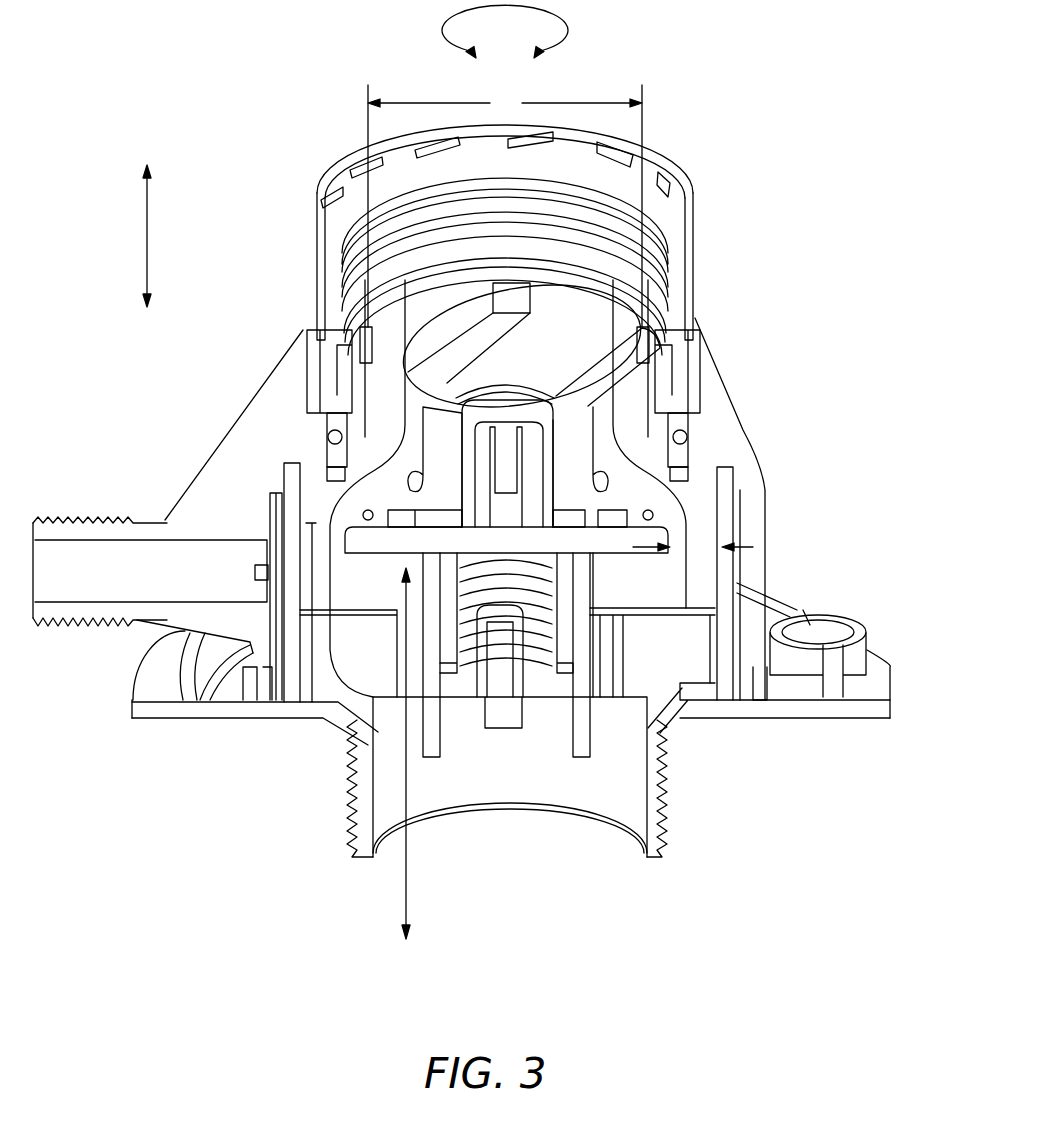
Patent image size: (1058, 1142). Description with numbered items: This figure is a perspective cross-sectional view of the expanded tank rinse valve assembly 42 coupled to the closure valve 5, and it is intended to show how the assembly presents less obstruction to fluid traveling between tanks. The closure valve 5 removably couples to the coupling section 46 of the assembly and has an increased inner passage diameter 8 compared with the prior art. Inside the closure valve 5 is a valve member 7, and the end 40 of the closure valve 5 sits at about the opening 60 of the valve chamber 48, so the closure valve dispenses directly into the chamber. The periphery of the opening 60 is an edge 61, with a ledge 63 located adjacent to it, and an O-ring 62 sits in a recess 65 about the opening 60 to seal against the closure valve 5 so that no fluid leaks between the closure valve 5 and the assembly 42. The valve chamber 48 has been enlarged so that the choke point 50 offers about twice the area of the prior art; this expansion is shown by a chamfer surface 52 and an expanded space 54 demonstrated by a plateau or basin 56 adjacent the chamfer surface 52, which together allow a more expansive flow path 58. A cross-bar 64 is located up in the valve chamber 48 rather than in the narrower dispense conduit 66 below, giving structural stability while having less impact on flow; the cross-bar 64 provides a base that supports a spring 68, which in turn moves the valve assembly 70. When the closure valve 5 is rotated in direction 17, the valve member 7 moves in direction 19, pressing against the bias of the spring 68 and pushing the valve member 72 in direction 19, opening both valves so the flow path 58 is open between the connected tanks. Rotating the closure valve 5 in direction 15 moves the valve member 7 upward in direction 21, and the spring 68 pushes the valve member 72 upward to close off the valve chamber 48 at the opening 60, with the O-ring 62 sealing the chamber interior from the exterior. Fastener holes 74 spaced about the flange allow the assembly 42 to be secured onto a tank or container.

The closure valve 5 is at (722, 168).
The valve member 7 is at (618, 487).
The inner passage diameter 8 is at (505, 206).
The direction 15 is at (470, 60).
The direction 17 is at (540, 60).
The direction 19 is at (143, 300).
The direction 21 is at (143, 170).
The end 40 is at (298, 520).
The expanded tank rinse valve assembly 42 is at (827, 368).
The coupling section 46 is at (728, 382).
The valve chamber 48 is at (786, 567).
The choke point 50 is at (690, 530).
The chamfer surface 52 is at (355, 722).
The expanded space 54 is at (297, 530).
The plateau or basin 56 is at (305, 705).
The flow path 58 is at (403, 927).
The opening 60 is at (330, 467).
The edge 61 is at (320, 480).
The O-ring 62 is at (330, 430).
The ledge 63 is at (712, 492).
The cross-bar 64 is at (830, 627).
The recess 65 is at (345, 445).
The dispense conduit 66 is at (636, 863).
The spring 68 is at (552, 697).
The valve assembly 70 is at (410, 575).
The valve member 72 is at (620, 550).
The fastener holes 74 is at (683, 650).